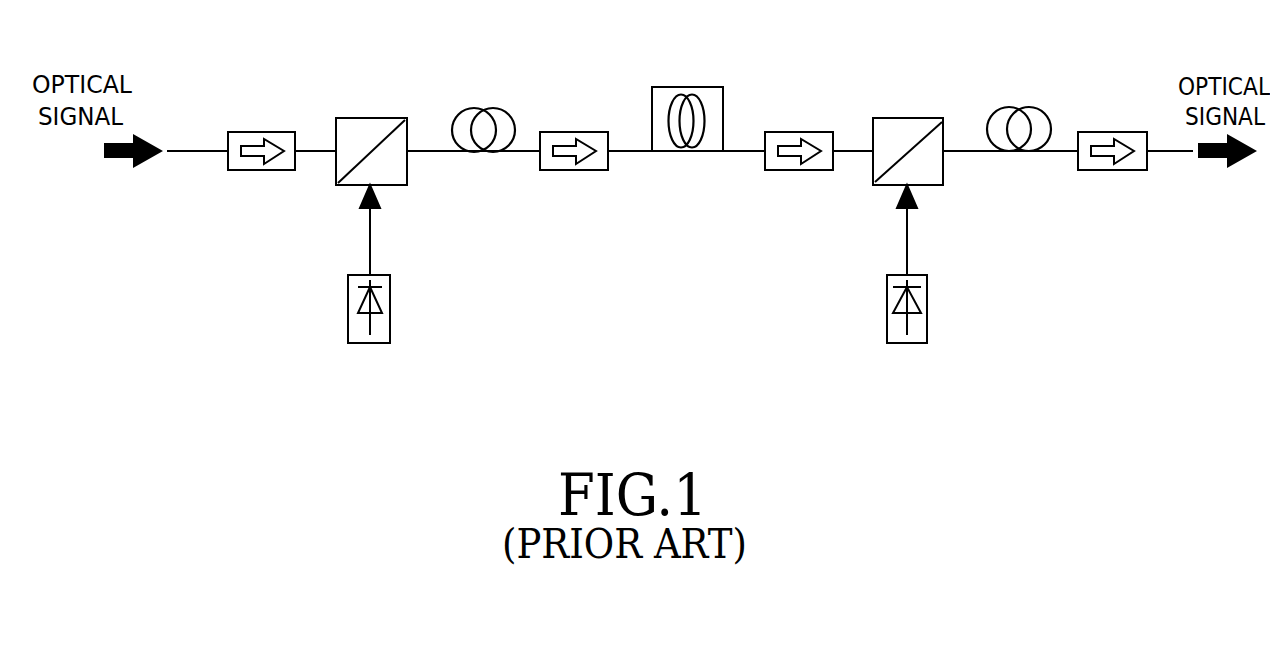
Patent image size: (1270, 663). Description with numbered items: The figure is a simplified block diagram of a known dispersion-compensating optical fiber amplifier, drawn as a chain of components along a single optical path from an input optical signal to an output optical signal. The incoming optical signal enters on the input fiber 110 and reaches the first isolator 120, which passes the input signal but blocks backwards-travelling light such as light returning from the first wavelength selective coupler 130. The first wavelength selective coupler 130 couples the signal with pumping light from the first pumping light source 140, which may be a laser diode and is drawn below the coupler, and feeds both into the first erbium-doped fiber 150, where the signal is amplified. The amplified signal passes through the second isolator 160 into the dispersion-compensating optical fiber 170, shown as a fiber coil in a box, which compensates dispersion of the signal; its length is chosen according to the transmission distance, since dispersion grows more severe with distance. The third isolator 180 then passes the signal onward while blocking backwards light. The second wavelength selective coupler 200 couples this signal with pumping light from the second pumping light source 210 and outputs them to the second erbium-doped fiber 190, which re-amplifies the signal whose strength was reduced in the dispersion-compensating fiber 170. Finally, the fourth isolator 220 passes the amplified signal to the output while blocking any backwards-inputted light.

The input optical fiber 110 is at (197, 148).
The first isolator 120 is at (258, 132).
The first wavelength selective coupler 130 is at (370, 118).
The first pumping light source 140 is at (392, 307).
The first erbium-doped fiber 150 is at (480, 108).
The second isolator 160 is at (573, 132).
The dispersion-compensating optical fiber 170 is at (687, 87).
The third isolator 180 is at (797, 132).
The second erbium-doped fiber 190 is at (1018, 107).
The second wavelength selective coupler 200 is at (907, 118).
The second pumping light source 210 is at (928, 305).
The fourth isolator 220 is at (1110, 132).